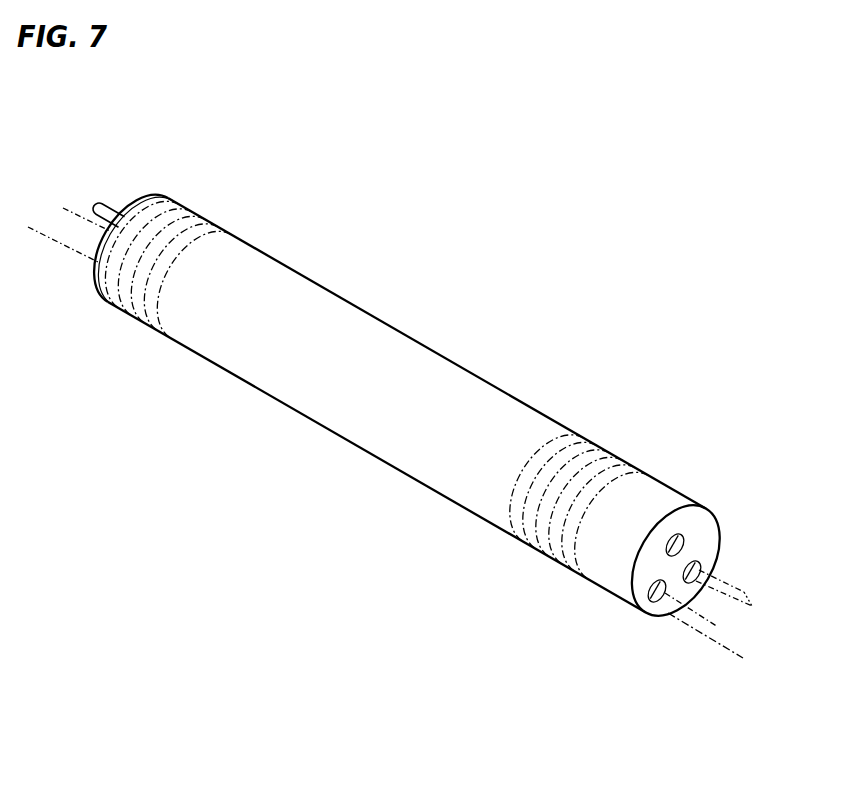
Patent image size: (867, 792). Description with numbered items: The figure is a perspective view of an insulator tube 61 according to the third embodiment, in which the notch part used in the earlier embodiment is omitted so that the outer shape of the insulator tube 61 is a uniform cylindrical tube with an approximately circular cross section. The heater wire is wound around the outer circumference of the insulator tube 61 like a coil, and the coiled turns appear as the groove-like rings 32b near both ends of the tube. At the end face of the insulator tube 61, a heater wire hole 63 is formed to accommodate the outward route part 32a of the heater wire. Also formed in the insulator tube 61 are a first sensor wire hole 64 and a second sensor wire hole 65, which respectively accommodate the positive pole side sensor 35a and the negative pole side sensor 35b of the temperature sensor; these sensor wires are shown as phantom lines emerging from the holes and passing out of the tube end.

The insulator tube 61 is at (311, 410).
The outward route part 32a is at (722, 566).
The groove portions of tube 32b is at (143, 217).
The heater wire hole 63 is at (695, 581).
The first sensor wire hole 64 is at (659, 613).
The second sensor wire hole 65 is at (682, 543).
The positive pole side sensor 35a is at (43, 233).
The negative pole side sensor 35b is at (74, 210).